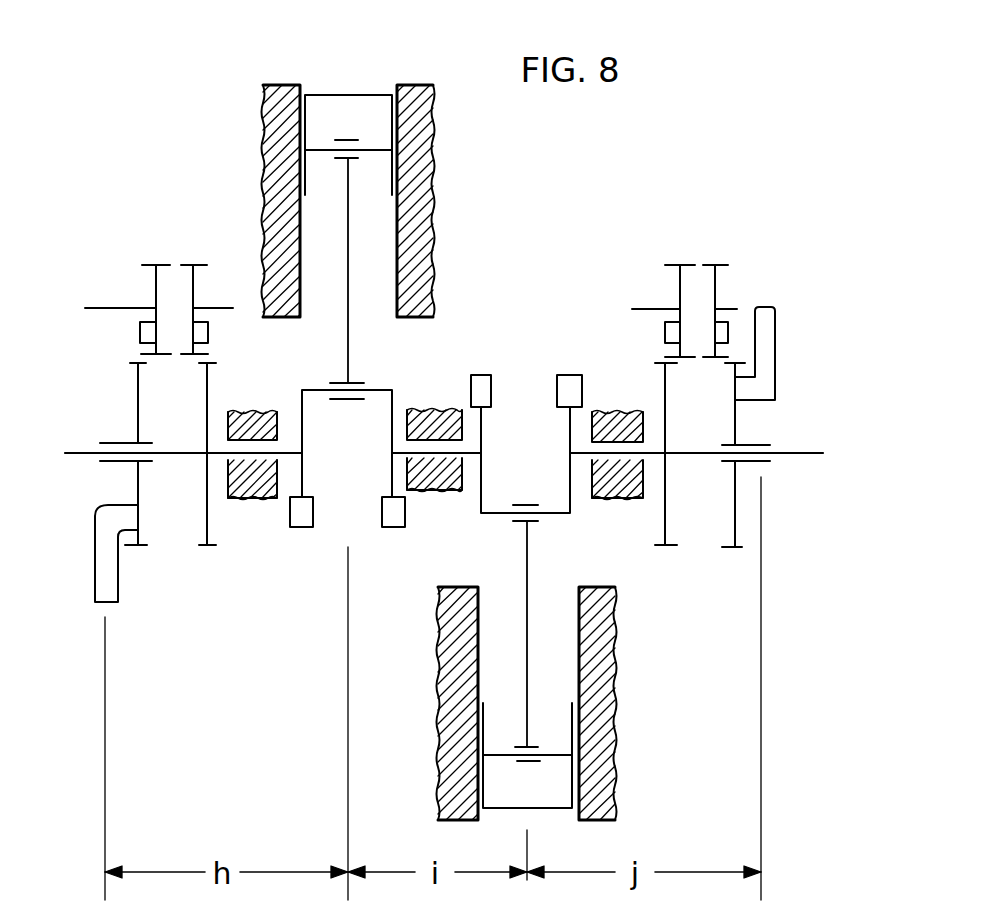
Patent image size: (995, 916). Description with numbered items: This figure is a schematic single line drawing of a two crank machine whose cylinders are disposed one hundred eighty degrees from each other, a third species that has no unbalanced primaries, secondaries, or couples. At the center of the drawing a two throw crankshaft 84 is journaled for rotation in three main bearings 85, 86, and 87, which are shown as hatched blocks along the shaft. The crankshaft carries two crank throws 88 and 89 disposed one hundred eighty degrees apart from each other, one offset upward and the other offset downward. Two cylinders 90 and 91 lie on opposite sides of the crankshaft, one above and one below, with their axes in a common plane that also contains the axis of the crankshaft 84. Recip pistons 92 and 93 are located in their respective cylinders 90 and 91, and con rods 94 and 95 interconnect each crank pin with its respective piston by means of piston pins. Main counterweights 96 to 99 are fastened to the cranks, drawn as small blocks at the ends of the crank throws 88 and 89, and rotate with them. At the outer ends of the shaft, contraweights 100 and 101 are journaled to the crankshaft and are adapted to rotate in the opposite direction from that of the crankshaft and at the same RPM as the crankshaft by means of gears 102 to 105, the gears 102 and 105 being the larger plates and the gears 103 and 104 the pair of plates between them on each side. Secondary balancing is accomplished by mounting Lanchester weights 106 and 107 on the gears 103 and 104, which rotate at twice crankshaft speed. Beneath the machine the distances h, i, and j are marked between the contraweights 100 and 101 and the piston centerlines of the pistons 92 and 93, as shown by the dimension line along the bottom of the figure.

The two throw crankshaft 84 is at (805, 455).
The main bearing 85 is at (255, 411).
The main bearing 86 is at (432, 411).
The main bearing 87 is at (618, 411).
The crank throw 88 is at (315, 388).
The crank throw 89 is at (491, 515).
The cylinder 90 is at (400, 258).
The cylinder 91 is at (582, 655).
The recip piston 92 is at (341, 95).
The recip piston 93 is at (551, 810).
The con rod 94 is at (350, 298).
The con rod 95 is at (530, 567).
The main counterweight 96 is at (302, 520).
The main counterweight 97 is at (392, 520).
The main counterweight 98 is at (481, 388).
The main counterweight 99 is at (569, 388).
The contraweight 100 is at (105, 582).
The contraweight 101 is at (767, 335).
The gear 102 is at (210, 549).
The gear 103 is at (201, 265).
The gear 104 is at (151, 265).
The gear 105 is at (138, 387).
The Lanchester weight 106 is at (208, 333).
The Lanchester weight 107 is at (140, 335).